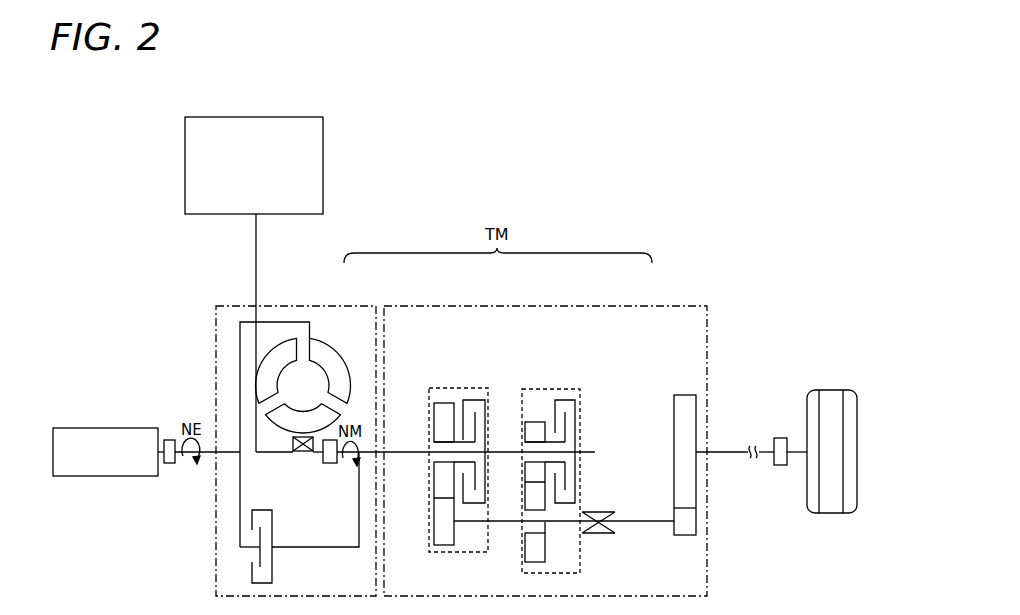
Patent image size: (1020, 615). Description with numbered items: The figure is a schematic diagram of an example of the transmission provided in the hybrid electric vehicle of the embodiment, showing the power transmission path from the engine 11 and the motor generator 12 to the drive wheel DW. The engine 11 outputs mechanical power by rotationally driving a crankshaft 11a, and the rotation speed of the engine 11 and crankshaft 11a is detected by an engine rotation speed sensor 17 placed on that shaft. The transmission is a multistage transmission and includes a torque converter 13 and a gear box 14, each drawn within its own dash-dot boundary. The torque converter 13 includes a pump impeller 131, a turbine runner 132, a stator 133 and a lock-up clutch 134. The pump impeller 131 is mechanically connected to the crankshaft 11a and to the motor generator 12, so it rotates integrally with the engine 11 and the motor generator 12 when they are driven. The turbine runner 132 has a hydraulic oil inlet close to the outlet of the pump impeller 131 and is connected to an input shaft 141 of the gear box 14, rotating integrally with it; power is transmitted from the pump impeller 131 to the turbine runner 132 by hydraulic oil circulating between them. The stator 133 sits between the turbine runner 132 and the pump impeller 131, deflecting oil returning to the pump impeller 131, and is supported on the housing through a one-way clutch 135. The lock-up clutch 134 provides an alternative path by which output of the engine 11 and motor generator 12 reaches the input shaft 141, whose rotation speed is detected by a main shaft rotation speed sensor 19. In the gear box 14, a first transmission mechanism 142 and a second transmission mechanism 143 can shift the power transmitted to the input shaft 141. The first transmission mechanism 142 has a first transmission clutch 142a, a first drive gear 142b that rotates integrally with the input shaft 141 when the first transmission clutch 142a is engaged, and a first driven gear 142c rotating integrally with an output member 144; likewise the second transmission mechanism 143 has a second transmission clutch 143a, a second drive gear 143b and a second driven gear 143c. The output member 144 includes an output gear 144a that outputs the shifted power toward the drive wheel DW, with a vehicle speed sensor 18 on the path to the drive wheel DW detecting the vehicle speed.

The engine 11 is at (122, 428).
The crankshaft 11a is at (213, 452).
The motor generator 12 is at (282, 117).
The torque converter 13 is at (373, 305).
The gear box 14 is at (645, 305).
The engine rotation speed sensor 17 is at (169, 440).
The vehicle speed sensor 18 is at (782, 438).
The main shaft rotation speed sensor 19 is at (329, 464).
The pump impeller 131 is at (327, 344).
The turbine runner 132 is at (264, 365).
The stator 133 is at (303, 410).
The lock-up clutch 134 is at (273, 576).
The one-way clutch 135 is at (293, 450).
The input shaft 141 is at (398, 447).
The first transmission mechanism 142 is at (582, 395).
The first transmission clutch 142a is at (564, 400).
The first drive gear 142b is at (534, 422).
The first driven gear 142c is at (522, 543).
The second transmission mechanism 143 is at (440, 388).
The second transmission clutch 143a is at (478, 400).
The second drive gear 143b is at (434, 487).
The second driven gear 143c is at (442, 545).
The output member 144 is at (625, 523).
The output gear 144a is at (677, 535).
The drive wheel DW is at (837, 390).